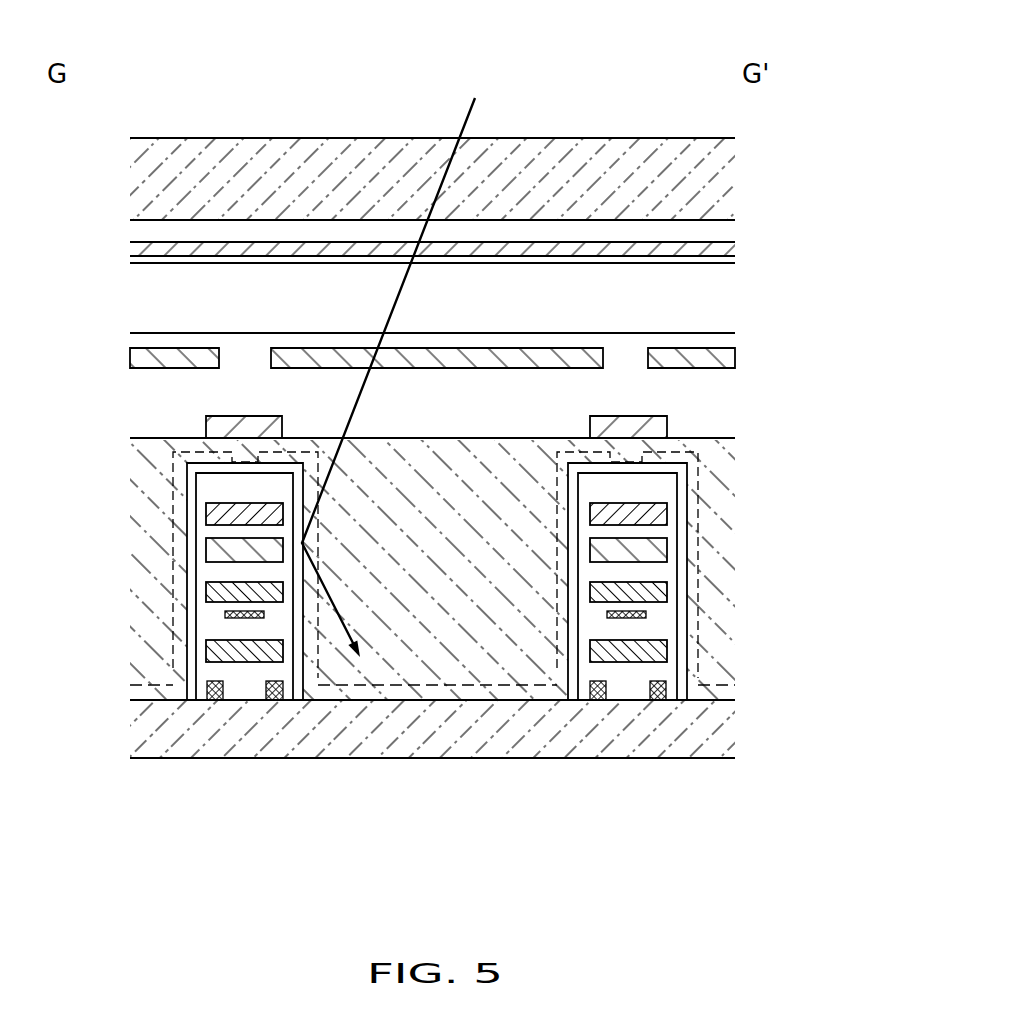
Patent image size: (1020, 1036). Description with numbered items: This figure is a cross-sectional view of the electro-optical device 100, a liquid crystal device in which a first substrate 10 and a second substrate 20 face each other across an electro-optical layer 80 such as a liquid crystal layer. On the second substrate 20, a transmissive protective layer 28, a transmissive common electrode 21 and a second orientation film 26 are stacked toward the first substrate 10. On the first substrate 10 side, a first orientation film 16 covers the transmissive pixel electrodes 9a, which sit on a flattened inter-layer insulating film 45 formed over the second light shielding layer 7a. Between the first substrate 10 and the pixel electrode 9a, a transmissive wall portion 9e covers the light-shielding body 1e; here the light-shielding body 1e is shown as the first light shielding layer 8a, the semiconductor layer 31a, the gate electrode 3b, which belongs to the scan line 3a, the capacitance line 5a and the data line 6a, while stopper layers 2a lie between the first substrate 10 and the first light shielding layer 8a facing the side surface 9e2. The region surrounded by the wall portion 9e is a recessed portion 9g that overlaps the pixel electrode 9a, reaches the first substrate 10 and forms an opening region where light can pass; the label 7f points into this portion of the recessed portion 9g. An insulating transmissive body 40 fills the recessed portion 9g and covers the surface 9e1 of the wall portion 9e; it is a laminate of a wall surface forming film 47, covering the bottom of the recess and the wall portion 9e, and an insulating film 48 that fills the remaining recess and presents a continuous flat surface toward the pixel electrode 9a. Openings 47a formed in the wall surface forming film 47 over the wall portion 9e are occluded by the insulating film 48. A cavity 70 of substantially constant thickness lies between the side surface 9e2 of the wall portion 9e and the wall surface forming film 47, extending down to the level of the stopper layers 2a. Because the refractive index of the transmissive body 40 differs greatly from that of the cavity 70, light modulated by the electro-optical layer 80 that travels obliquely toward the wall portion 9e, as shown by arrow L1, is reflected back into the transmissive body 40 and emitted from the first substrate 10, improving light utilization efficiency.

The electro-optical device 100 is at (792, 115).
The first substrate 10 is at (722, 727).
The second substrate 20 is at (730, 181).
The common electrode 21 is at (143, 250).
The second orientation film 26 is at (193, 262).
The protective layer 28 is at (553, 235).
The first orientation film 16 is at (201, 345).
The pixel electrode 9a is at (528, 355).
The electro-optical layer 80 is at (694, 322).
The inter-layer insulating film 45 is at (730, 397).
The second light shielding layer 7a is at (238, 422).
The openings 47a is at (262, 460).
The interlayer insulating film 7f is at (483, 463).
The wall portion 9e is at (372, 611).
The surface of the wall portion 9e1 is at (220, 468).
The side surface of the wall portion 9e2 is at (303, 605).
The recessed portion 9g is at (580, 628).
The cavity 70 is at (293, 605).
The light-shielding body 1e is at (338, 597).
The data line 6a is at (212, 513).
The capacitance line 5a is at (212, 548).
The scan line 3a is at (338, 601).
The gate electrode 3b is at (213, 587).
The semiconductor layer 31a is at (230, 614).
The first light shielding layer 8a is at (212, 650).
The stopper layers 2a is at (272, 700).
The transmissive body 40 is at (432, 656).
The wall surface forming film 47 is at (467, 693).
The insulating film 48 is at (502, 660).
The arrow L1 is at (398, 364).